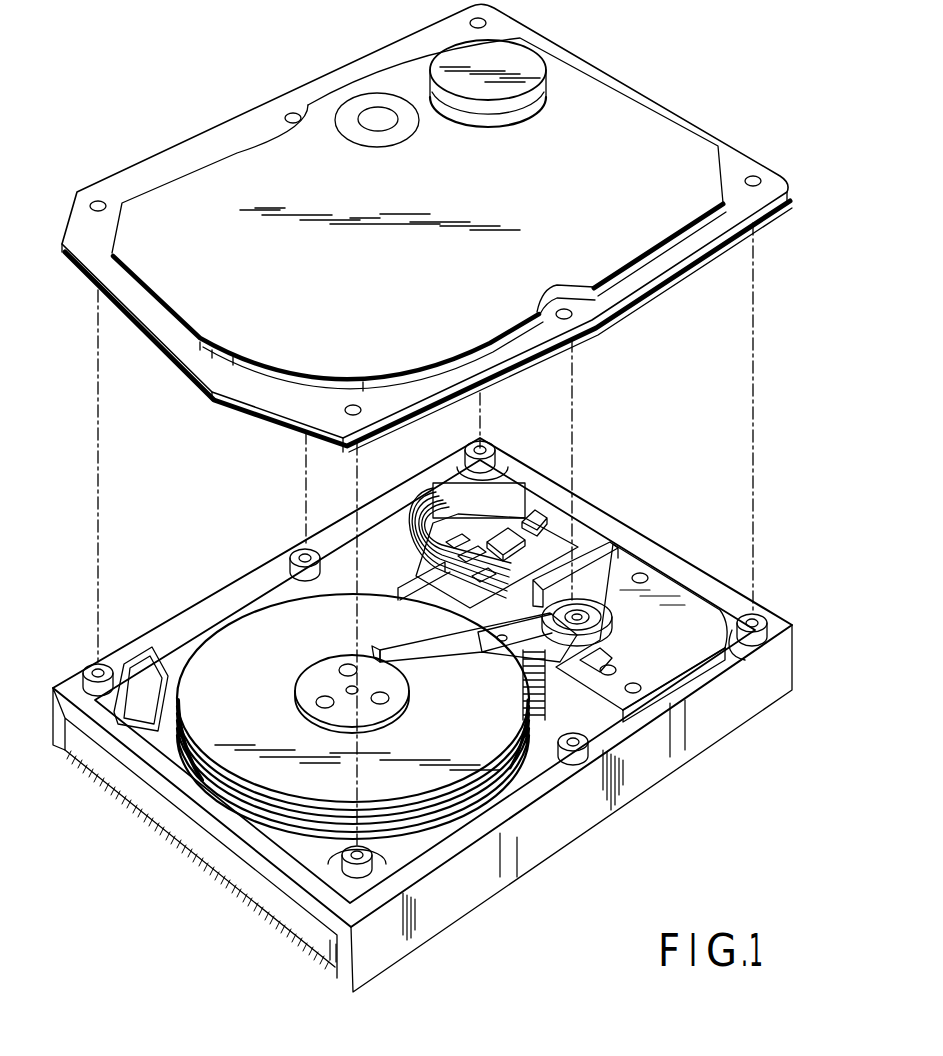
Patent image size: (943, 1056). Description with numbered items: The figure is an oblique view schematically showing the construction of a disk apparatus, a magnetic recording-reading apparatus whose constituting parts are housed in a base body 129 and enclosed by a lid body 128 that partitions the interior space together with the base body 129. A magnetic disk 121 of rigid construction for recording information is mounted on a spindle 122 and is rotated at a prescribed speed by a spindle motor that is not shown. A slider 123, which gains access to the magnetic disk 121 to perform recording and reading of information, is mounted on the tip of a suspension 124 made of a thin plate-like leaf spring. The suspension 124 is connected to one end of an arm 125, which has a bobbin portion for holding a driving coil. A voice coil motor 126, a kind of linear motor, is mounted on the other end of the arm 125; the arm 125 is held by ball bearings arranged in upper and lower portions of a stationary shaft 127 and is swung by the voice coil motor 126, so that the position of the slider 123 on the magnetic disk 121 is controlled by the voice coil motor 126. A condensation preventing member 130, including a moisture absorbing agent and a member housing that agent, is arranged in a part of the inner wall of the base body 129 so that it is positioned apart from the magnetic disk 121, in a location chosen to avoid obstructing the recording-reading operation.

The magnetic disk 121 is at (213, 663).
The spindle 122 is at (307, 692).
The slider 123 is at (377, 656).
The suspension 124 is at (437, 645).
The arm 125 is at (508, 650).
The voice coil motor 126 is at (675, 597).
The stationary shaft 127 is at (598, 606).
The lid body 128 is at (653, 133).
The base body 129 is at (462, 895).
The condensation preventing member 130 is at (130, 720).